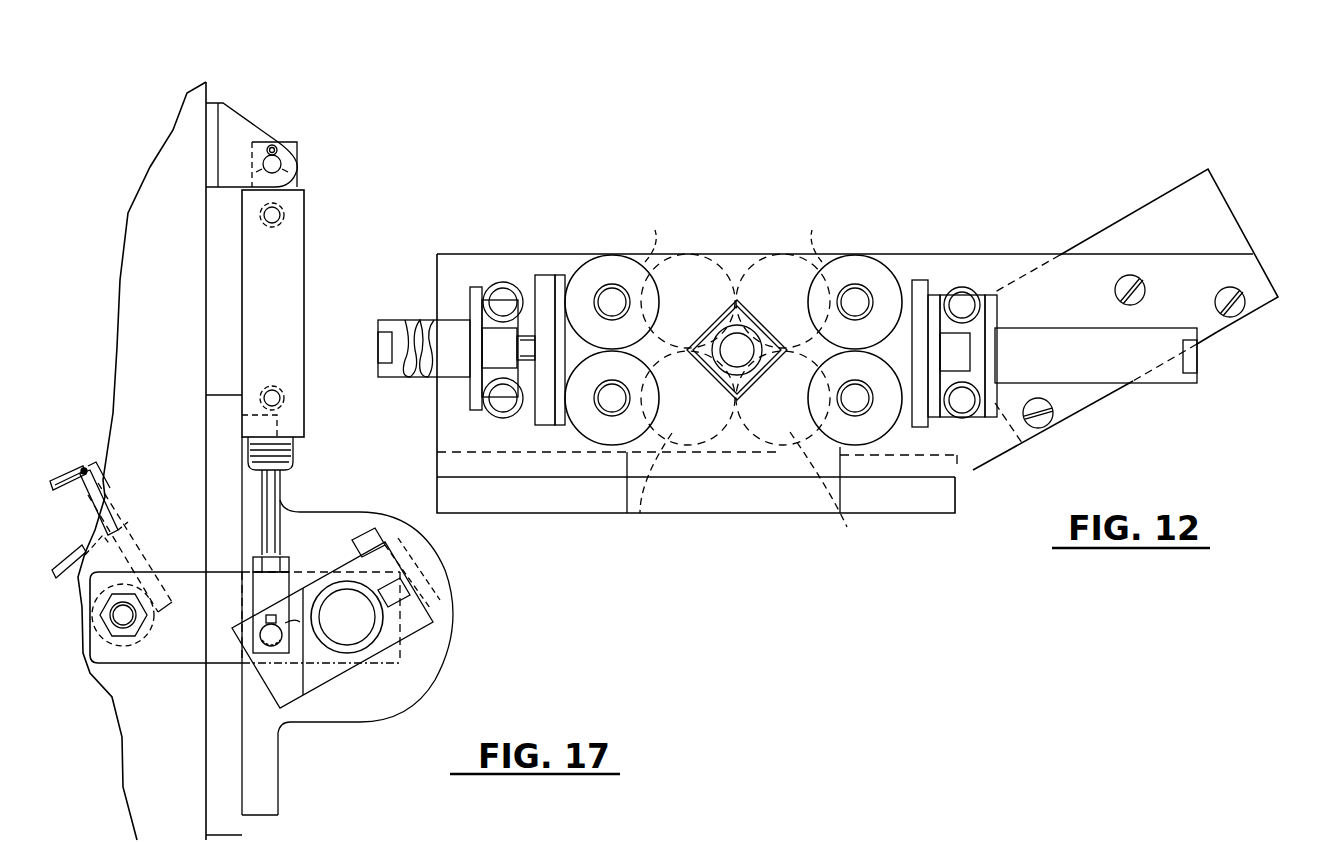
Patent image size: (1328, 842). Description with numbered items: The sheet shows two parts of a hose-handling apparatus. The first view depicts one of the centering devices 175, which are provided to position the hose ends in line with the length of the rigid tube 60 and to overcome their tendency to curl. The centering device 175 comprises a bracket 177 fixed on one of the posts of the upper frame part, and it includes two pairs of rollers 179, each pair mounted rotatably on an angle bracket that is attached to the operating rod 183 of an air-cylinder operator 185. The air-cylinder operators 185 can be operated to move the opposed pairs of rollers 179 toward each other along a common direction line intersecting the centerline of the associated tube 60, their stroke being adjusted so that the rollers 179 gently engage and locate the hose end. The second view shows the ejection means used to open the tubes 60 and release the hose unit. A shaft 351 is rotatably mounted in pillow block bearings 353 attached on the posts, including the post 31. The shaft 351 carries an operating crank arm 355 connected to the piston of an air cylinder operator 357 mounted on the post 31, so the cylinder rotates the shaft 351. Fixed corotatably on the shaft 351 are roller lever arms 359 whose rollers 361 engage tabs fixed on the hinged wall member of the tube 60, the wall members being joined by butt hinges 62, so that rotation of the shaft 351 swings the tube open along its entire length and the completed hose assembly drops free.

In FIG. 17, the post 31 is at (178, 322).
In FIG. 17, the air cylinder operator 357 is at (298, 247).
In FIG. 17, the rigid tube 60 is at (60, 483).
In FIG. 12, the rigid tube 60 is at (737, 298).
In FIG. 17, the butt hinge 62 is at (88, 470).
In FIG. 17, the roller 361 is at (140, 580).
In FIG. 17, the roller lever arm 359 is at (182, 655).
In FIG. 17, the shaft 351 is at (362, 624).
In FIG. 17, the pillow block bearing 353 is at (392, 693).
In FIG. 17, the operating crank arm 355 is at (287, 683).
In FIG. 12, the centering device 175 is at (726, 528).
In FIG. 12, the bracket 177 is at (1155, 208).
In FIG. 12, the rollers 179 is at (612, 265).
In FIG. 12, the operating rod 183 is at (513, 352).
In FIG. 12, the air-cylinder operator 185 is at (405, 332).